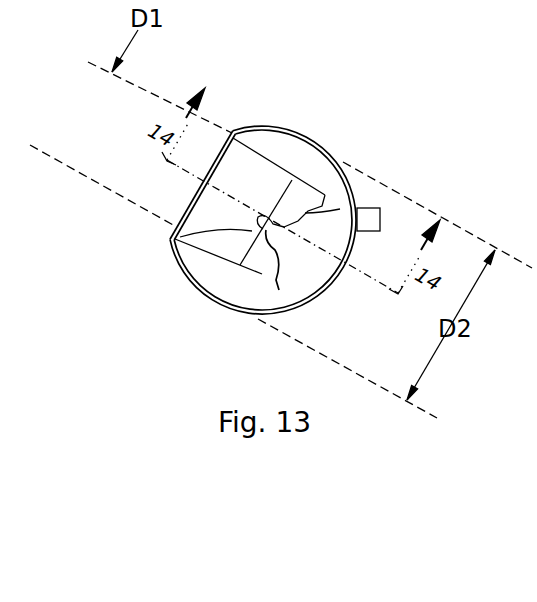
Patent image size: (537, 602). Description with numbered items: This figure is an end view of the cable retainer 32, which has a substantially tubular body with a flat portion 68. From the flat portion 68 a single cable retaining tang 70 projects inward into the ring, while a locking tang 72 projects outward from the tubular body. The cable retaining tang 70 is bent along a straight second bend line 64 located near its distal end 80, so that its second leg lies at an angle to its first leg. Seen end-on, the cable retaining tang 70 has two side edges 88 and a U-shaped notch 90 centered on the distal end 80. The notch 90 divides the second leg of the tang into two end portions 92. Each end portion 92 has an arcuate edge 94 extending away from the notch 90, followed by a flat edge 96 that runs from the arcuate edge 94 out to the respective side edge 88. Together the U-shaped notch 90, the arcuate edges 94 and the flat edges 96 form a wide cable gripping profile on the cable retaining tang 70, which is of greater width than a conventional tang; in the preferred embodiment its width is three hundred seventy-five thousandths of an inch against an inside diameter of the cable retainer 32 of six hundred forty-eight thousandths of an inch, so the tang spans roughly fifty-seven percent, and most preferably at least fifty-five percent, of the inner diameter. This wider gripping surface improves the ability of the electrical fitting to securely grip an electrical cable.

The cable retainer 32 is at (389, 87).
The second bend line 64 is at (170, 240).
The flat portion 68 is at (183, 212).
The cable retaining tang 70 is at (258, 195).
The locking tang 72 is at (382, 226).
The distal end 80 is at (283, 232).
The side edges 88 is at (259, 218).
The U-shaped notch 90 is at (270, 228).
The end portions 92 is at (298, 200).
The arcuate edge 94 is at (284, 229).
The flat edge 96 is at (340, 209).